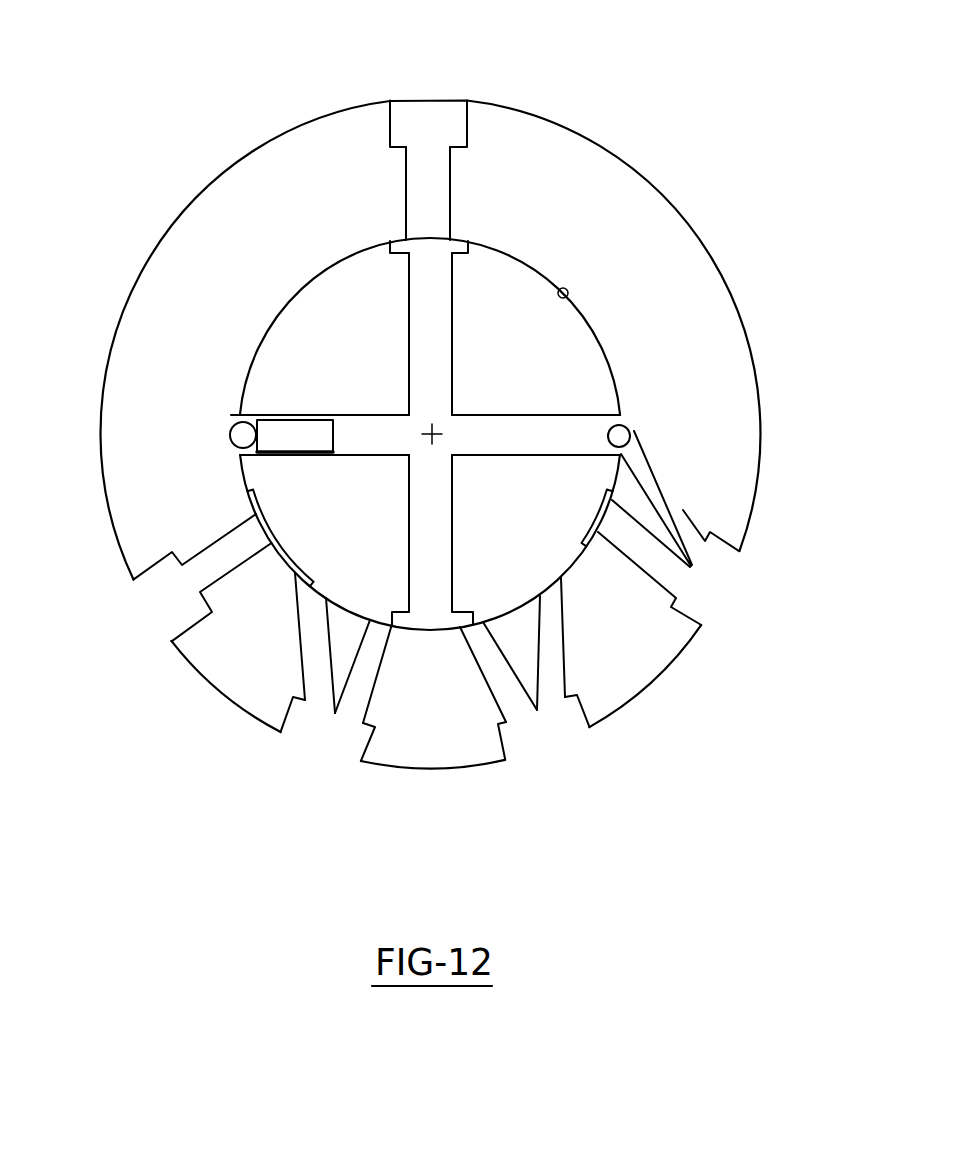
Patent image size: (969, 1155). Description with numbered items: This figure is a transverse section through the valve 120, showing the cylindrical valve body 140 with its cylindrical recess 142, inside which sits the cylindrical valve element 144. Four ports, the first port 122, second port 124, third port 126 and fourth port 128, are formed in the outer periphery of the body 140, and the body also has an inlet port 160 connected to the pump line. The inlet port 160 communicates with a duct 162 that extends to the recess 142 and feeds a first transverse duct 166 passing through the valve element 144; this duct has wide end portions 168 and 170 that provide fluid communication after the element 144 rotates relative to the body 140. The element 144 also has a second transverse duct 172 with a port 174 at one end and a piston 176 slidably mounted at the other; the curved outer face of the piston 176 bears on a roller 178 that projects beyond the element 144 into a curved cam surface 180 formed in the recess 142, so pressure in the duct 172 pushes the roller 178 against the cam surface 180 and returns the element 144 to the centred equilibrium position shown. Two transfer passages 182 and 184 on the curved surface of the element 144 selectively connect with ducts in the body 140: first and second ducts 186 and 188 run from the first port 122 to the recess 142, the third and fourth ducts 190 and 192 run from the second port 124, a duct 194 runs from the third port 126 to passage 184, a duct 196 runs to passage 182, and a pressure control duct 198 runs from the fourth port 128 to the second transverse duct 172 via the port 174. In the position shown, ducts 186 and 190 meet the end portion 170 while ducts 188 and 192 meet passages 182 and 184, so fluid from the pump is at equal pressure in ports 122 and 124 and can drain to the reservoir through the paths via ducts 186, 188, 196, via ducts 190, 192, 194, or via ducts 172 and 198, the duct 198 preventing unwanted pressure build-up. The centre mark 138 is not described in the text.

The valve 120 is at (735, 243).
The first port 122 is at (553, 727).
The second port 124 is at (327, 733).
The third port 126 is at (168, 597).
The fourth port 128 is at (708, 597).
The center axis 138 is at (432, 434).
The valve body 140 is at (732, 372).
The cylindrical recess 142 is at (568, 291).
The valve element 144 is at (584, 353).
The inlet port 160 is at (440, 124).
The duct 162 is at (438, 190).
The first transverse duct 166 is at (425, 338).
The wide end portion 168 is at (460, 243).
The wide end portion 170 is at (462, 620).
The second transverse duct 172 is at (505, 432).
The port 174 is at (627, 441).
The piston 176 is at (300, 437).
The roller 178 is at (230, 437).
The cam surface 180 is at (236, 420).
The first transfer passage 182 is at (585, 548).
The second transfer passage 184 is at (291, 558).
The first duct 186 is at (502, 672).
The second duct 188 is at (553, 658).
The third duct 190 is at (375, 680).
The fourth duct 192 is at (312, 655).
The duct 194 is at (248, 585).
The duct 196 is at (652, 558).
The pressure control duct 198 is at (683, 512).